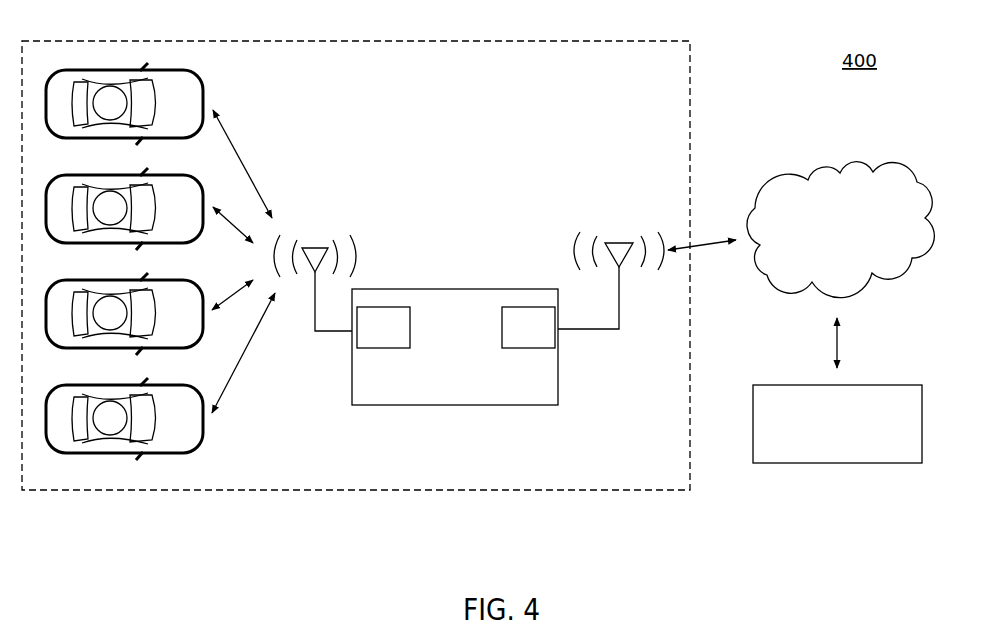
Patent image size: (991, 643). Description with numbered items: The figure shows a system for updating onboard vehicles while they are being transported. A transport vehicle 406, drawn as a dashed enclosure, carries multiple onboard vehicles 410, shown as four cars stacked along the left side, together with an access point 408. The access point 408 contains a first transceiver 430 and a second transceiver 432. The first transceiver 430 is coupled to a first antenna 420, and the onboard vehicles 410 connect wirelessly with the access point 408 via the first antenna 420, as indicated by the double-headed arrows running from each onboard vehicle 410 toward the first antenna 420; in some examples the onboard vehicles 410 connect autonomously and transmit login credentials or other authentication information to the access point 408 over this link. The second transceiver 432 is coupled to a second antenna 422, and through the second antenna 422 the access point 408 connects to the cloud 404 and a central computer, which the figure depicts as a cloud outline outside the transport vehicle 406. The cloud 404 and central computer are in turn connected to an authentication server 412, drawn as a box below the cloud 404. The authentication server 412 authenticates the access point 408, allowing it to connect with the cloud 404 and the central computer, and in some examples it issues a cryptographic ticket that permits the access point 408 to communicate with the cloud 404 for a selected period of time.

The cloud 404 is at (840, 230).
The transport vehicle 406 is at (87, 493).
The access point 408 is at (455, 347).
The onboard vehicles 410 is at (124, 261).
The authentication server 412 is at (837, 424).
The first antenna 420 is at (315, 229).
The second antenna 422 is at (619, 227).
The first transceiver 430 is at (383, 327).
The second transceiver 432 is at (528, 327).